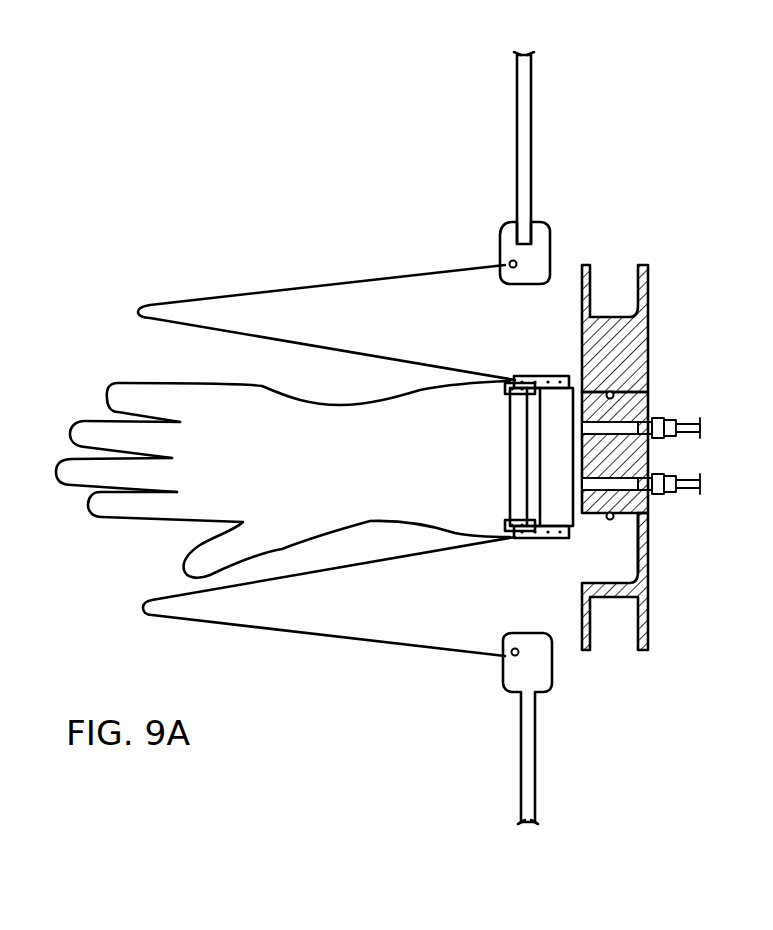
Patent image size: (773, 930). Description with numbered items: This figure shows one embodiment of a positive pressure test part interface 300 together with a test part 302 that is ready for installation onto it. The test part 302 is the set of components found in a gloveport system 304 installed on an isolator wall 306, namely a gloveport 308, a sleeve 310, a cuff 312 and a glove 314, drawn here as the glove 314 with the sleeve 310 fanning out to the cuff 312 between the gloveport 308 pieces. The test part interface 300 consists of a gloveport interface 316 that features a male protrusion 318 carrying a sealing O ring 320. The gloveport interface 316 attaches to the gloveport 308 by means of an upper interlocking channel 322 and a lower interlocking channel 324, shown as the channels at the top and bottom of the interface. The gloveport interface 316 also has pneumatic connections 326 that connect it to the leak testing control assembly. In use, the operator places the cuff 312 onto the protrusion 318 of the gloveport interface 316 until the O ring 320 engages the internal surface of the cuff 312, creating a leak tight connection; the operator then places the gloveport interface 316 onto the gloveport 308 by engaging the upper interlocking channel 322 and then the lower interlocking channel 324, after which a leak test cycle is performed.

The test part interface 300 is at (642, 662).
The test part 302 is at (521, 548).
The gloveport system 304 is at (555, 218).
The isolator wall 306 is at (516, 108).
The gloveport 308 is at (503, 232).
The sleeve 310 is at (333, 280).
The cuff 312 is at (517, 403).
The glove 314 is at (142, 518).
The gloveport interface 316 is at (648, 518).
The male protrusion 318 is at (598, 390).
The sealing O ring 320 is at (648, 555).
The upper interlocking channel 322 is at (642, 300).
The lower interlocking channel 324 is at (645, 628).
The pneumatic connections 326 is at (728, 388).